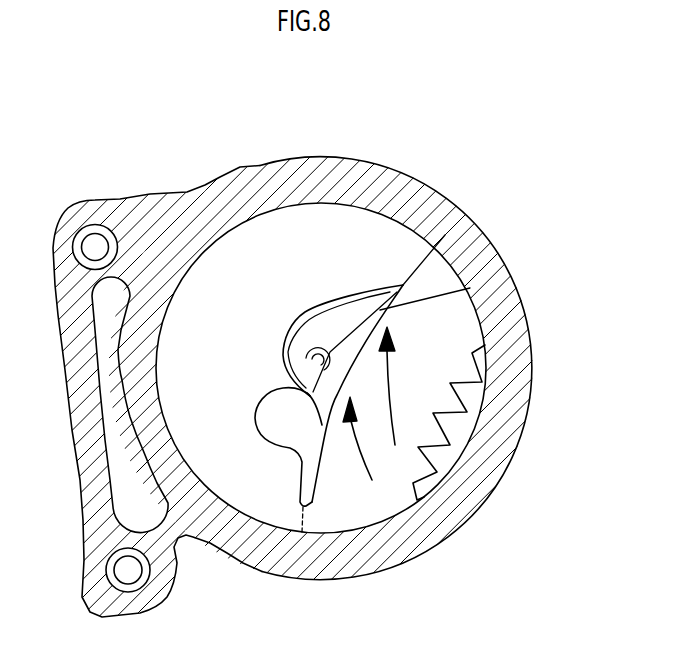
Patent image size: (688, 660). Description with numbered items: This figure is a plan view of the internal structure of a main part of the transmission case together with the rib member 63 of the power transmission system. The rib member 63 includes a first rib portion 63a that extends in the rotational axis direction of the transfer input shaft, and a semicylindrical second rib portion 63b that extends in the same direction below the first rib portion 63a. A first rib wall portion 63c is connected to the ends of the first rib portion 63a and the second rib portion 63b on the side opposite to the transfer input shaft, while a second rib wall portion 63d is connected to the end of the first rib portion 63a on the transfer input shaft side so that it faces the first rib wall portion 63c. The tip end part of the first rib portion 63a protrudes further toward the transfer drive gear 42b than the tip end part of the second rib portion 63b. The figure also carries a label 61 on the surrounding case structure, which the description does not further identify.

The housing / ring body 61 is at (248, 557).
The transfer drive gear 42b is at (460, 430).
The rib member 63 is at (286, 327).
The first rib portion 63a is at (348, 298).
The second rib portion 63b is at (300, 335).
The first rib wall portion 63c is at (507, 264).
The second rib wall portion 63d is at (290, 327).